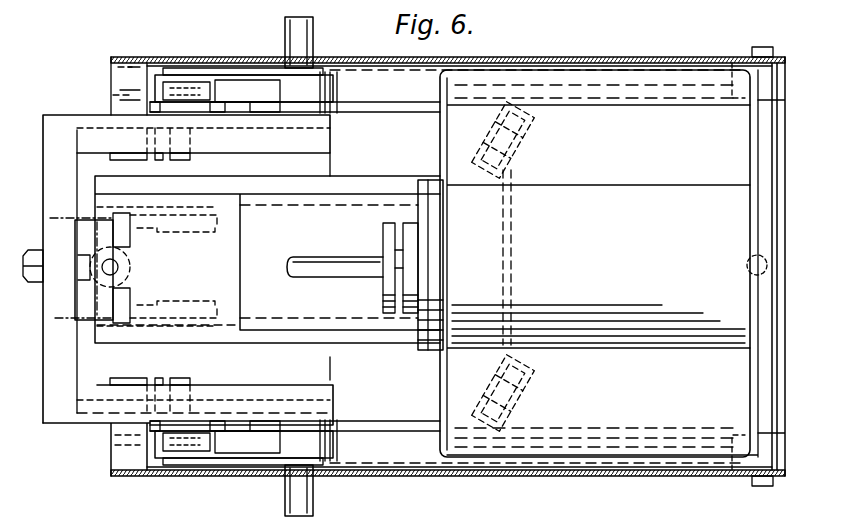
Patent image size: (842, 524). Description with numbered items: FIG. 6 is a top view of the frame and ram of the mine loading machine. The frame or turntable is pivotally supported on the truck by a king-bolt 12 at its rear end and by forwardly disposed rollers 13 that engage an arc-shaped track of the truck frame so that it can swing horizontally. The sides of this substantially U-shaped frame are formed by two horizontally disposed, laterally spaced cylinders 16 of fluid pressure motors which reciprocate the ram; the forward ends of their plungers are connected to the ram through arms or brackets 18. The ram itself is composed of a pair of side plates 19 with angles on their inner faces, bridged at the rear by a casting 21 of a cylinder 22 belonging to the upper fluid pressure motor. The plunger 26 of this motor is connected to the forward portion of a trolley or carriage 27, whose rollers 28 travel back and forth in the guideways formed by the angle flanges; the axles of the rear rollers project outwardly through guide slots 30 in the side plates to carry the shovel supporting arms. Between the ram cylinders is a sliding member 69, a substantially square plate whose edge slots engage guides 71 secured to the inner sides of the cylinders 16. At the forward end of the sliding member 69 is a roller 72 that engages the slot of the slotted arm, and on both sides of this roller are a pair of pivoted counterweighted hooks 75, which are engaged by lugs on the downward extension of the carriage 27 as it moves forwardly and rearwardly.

The king-bolt 12 is at (748, 273).
The rollers 13 is at (522, 130).
The cylinders 16 is at (295, 266).
The arms or brackets 18 is at (110, 437).
The side plates 19 is at (683, 57).
The casting 21 is at (599, 266).
The cylinder 22 is at (598, 296).
The plunger 26 is at (340, 265).
The trolley or carriage 27 is at (188, 270).
The rollers 28 is at (192, 90).
The guide slots 30 is at (612, 57).
The sliding member 69 is at (234, 300).
The guides 71 is at (307, 202).
The roller 72 is at (94, 268).
The counterweighted hooks 75 is at (203, 306).